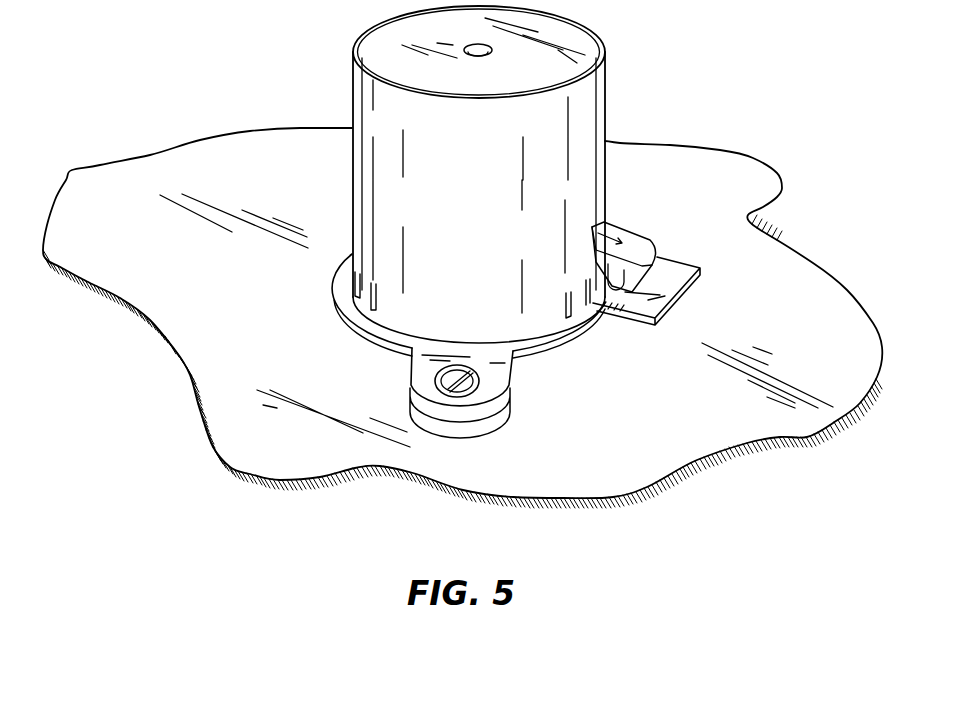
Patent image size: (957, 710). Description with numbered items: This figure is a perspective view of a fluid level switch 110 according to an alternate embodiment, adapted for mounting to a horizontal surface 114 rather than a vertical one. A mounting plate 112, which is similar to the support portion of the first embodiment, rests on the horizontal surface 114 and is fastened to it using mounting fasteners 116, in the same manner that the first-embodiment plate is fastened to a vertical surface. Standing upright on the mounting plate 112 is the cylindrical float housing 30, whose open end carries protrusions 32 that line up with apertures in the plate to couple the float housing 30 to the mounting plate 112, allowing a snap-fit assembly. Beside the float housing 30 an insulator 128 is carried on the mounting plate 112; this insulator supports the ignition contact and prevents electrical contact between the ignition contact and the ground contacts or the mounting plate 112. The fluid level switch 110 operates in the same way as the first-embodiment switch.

The fluid level switch 110 is at (699, 111).
The float housing 30 is at (581, 178).
The protrusions 32 is at (357, 318).
The mounting plate 112 is at (548, 350).
The horizontal surface 114 is at (238, 298).
The mounting fasteners 116 is at (408, 365).
The insulator 128 is at (662, 245).